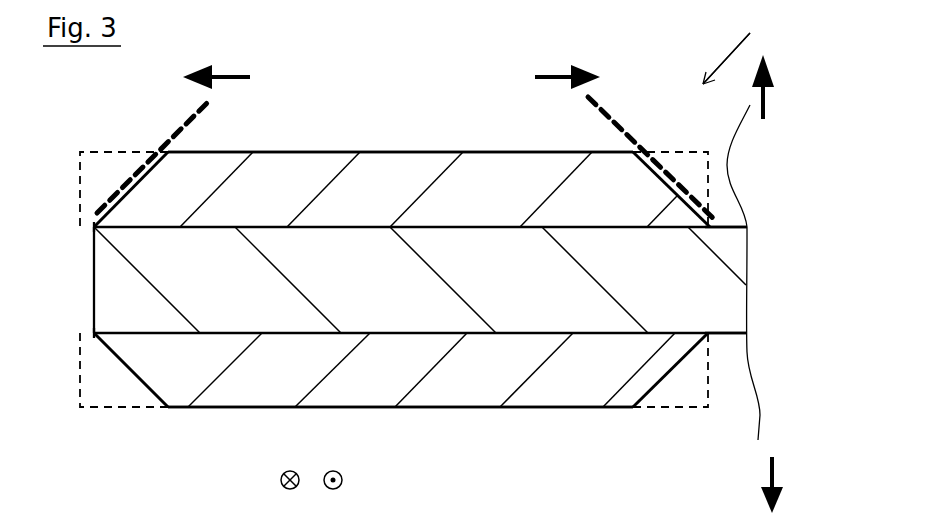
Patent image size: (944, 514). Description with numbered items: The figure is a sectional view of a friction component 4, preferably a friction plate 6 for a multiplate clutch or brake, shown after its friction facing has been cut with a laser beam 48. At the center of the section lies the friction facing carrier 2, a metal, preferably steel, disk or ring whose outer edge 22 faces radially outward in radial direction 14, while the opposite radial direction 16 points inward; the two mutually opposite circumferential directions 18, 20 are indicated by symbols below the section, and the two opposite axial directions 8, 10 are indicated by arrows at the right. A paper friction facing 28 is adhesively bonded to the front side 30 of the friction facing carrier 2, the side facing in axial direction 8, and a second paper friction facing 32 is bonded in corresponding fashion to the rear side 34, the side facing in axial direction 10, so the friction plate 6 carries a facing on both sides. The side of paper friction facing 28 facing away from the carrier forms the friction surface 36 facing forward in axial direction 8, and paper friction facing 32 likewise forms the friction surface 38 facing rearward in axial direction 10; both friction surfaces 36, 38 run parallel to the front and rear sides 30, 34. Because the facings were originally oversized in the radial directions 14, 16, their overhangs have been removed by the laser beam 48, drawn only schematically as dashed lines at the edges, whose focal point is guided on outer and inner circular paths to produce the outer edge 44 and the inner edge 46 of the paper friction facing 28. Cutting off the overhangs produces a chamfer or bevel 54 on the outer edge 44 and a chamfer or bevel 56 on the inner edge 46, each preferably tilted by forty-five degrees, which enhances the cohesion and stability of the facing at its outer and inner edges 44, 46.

The friction facing carrier 2 is at (413, 280).
The friction component 4 is at (744, 48).
The friction plate 6 is at (744, 48).
The axial direction 8 is at (757, 98).
The axial direction 10 is at (766, 474).
The radial direction 14 is at (235, 71).
The radial direction 16 is at (548, 72).
The circumferential direction 18 is at (343, 478).
The circumferential direction 20 is at (279, 479).
The outer edge 22 is at (94, 275).
The paper friction facing 28 is at (588, 193).
The front side 30 is at (264, 222).
The paper friction facing 32 is at (607, 365).
The rear side 34 is at (303, 337).
The friction surface 36 is at (428, 150).
The friction surface 38 is at (492, 411).
The outer edge 44 is at (92, 225).
The inner edge 46 is at (710, 225).
The laser beam 48 is at (179, 128).
The chamfer or bevel 54 is at (126, 188).
The chamfer or bevel 56 is at (660, 167).